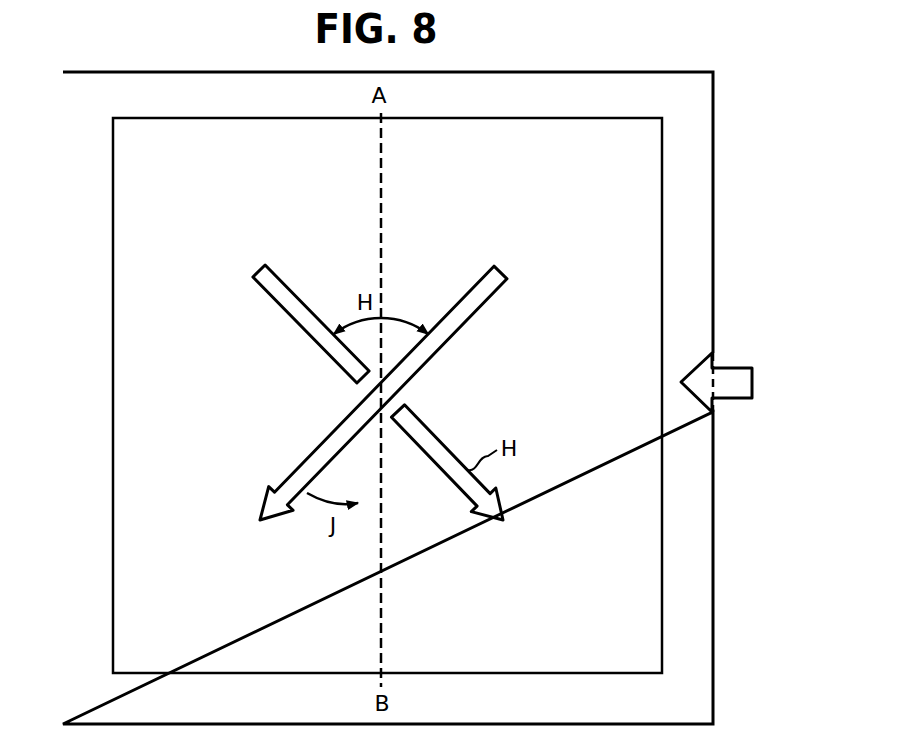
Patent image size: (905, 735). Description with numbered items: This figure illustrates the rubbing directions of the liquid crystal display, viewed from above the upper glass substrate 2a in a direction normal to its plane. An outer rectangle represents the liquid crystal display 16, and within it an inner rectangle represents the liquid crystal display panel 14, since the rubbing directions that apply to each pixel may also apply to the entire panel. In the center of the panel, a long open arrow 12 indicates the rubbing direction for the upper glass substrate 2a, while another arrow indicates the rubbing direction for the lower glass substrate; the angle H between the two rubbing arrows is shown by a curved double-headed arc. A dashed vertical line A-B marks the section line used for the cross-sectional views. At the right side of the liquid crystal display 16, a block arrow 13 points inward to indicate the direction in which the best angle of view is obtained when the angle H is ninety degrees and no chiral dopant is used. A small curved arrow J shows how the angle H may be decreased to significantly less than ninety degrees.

The arrow 12 is at (470, 308).
The arrow 13 is at (735, 382).
The liquid crystal display panel 14 is at (662, 180).
The liquid crystal display 16 is at (713, 235).
The upper glass substrate 2a is at (593, 637).